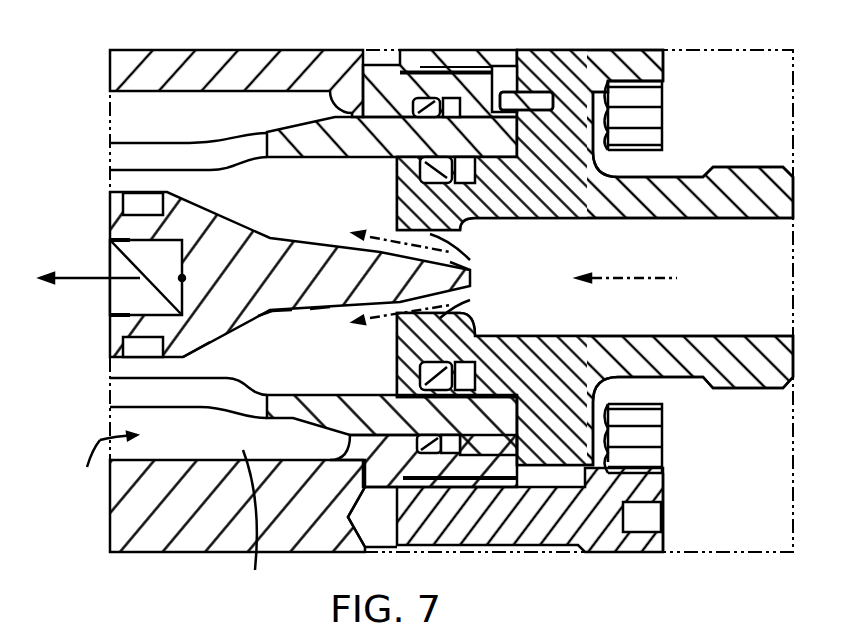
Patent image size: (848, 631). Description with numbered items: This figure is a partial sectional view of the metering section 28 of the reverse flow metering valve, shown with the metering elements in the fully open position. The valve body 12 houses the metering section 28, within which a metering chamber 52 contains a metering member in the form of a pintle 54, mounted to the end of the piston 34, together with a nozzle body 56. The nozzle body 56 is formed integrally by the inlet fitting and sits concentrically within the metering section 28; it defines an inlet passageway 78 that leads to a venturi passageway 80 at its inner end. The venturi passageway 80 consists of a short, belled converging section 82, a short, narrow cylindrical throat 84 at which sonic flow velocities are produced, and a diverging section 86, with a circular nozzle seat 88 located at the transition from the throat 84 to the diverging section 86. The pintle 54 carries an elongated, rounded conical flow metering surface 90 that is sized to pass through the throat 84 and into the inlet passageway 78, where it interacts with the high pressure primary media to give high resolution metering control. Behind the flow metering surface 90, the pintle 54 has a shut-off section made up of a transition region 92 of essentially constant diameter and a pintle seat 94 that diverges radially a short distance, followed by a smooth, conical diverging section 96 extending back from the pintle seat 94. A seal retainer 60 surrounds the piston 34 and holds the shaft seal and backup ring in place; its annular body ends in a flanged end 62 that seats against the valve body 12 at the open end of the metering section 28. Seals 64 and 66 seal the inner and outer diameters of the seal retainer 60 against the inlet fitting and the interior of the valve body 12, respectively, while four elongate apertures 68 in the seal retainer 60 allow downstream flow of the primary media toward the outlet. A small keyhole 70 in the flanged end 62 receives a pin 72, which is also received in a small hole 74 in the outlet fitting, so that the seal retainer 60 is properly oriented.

The valve body 12 is at (188, 537).
The metering section 28 is at (98, 462).
The piston 34 is at (110, 258).
The metering chamber 52 is at (255, 523).
The pintle 54 is at (225, 233).
The nozzle body 56 is at (648, 190).
The seal retainer 60 is at (297, 130).
The flanged end 62 is at (503, 457).
The seal 64 is at (450, 372).
The seal 66 is at (347, 450).
The elongate apertures 68 is at (138, 150).
The keyhole 70 is at (487, 65).
The pin 72 is at (520, 92).
The hole 74 is at (594, 92).
The inlet passageway 78 is at (750, 300).
The venturi passageway 80 is at (465, 308).
The converging section 82 is at (450, 240).
The throat 84 is at (470, 270).
The diverging section 86 is at (397, 228).
The nozzle seat 88 is at (397, 328).
The flow metering surface 90 is at (318, 311).
The transition region 92 is at (280, 311).
The pintle seat 94 is at (270, 312).
The diverging section 96 is at (185, 357).